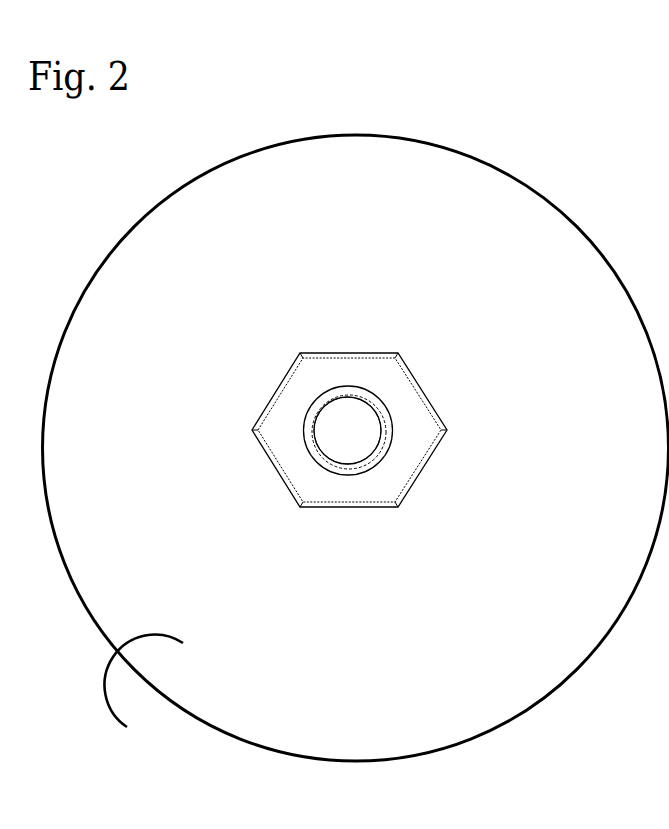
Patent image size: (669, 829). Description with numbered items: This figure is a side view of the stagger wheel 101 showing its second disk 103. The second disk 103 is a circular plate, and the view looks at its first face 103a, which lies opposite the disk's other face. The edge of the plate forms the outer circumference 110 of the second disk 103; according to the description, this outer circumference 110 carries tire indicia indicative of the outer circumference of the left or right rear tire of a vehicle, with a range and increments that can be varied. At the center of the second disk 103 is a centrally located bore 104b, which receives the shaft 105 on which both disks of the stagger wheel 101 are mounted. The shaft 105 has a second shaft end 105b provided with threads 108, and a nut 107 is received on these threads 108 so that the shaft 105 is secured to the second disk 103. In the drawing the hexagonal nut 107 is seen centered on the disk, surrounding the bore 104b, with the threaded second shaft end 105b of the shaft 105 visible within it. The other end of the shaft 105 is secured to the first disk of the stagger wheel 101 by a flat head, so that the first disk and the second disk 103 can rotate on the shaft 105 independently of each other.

The stagger wheel 101 is at (262, 111).
The second disk 103 is at (492, 185).
The first face 103a is at (144, 707).
The outer circumference 110 is at (553, 693).
The nut 107 is at (352, 363).
The centrally located bore 104b is at (325, 408).
The shaft 105 is at (345, 438).
The second shaft end 105b is at (360, 413).
The threads 108 is at (380, 450).